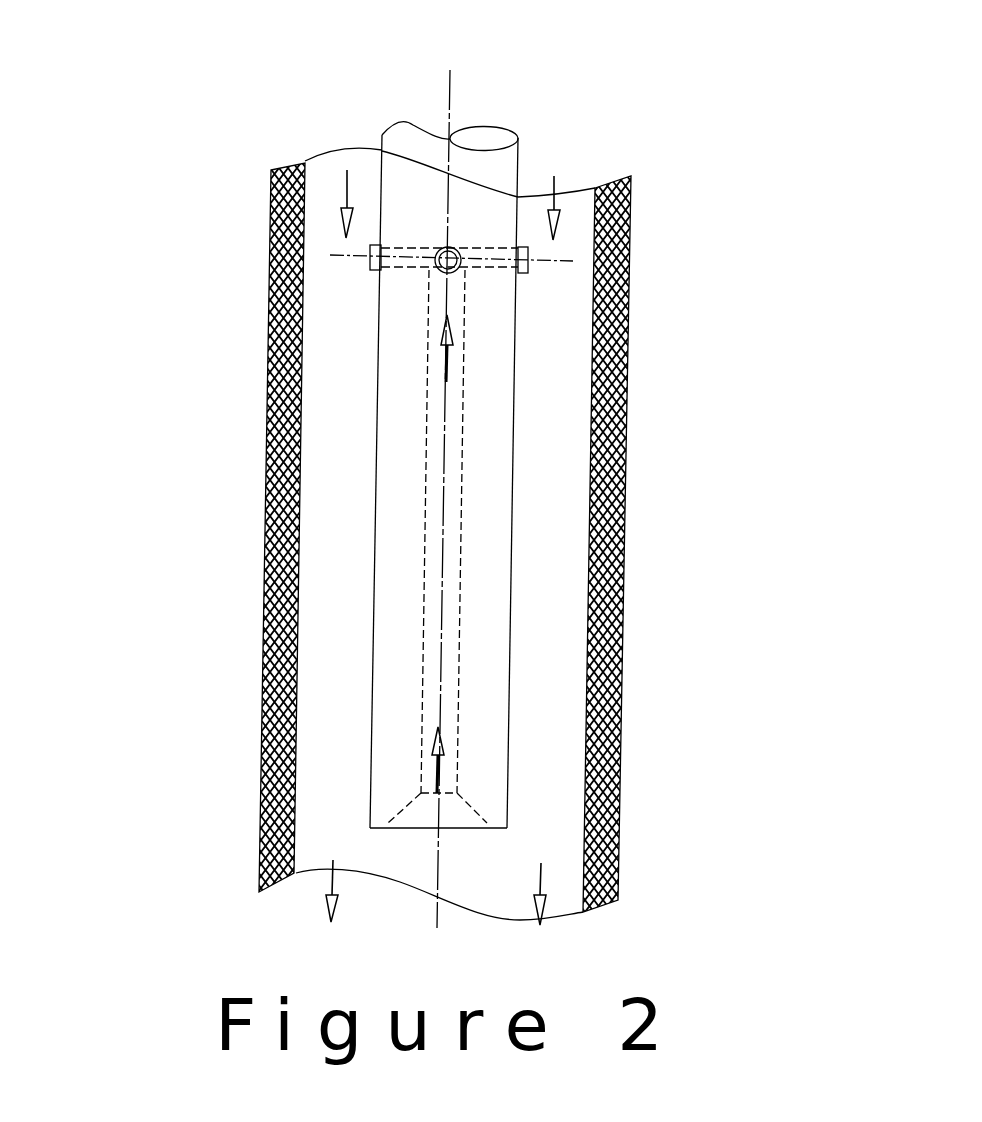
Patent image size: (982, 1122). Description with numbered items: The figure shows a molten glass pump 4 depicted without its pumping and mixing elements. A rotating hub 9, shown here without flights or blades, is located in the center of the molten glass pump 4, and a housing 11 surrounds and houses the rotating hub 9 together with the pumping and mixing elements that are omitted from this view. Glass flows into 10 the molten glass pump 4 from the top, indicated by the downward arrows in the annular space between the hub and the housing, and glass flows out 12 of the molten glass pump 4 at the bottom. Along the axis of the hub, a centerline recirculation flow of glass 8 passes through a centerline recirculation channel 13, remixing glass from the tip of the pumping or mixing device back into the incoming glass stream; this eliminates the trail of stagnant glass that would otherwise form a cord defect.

The molten glass pump 4 is at (457, 471).
The centerline recirculation flow of glass 8 is at (450, 755).
The rotating hub 9 is at (522, 145).
The glass inflow 10 is at (547, 213).
The housing 11 is at (629, 387).
The glass outflow 12 is at (530, 897).
The centerline recirculation channel 13 is at (423, 623).